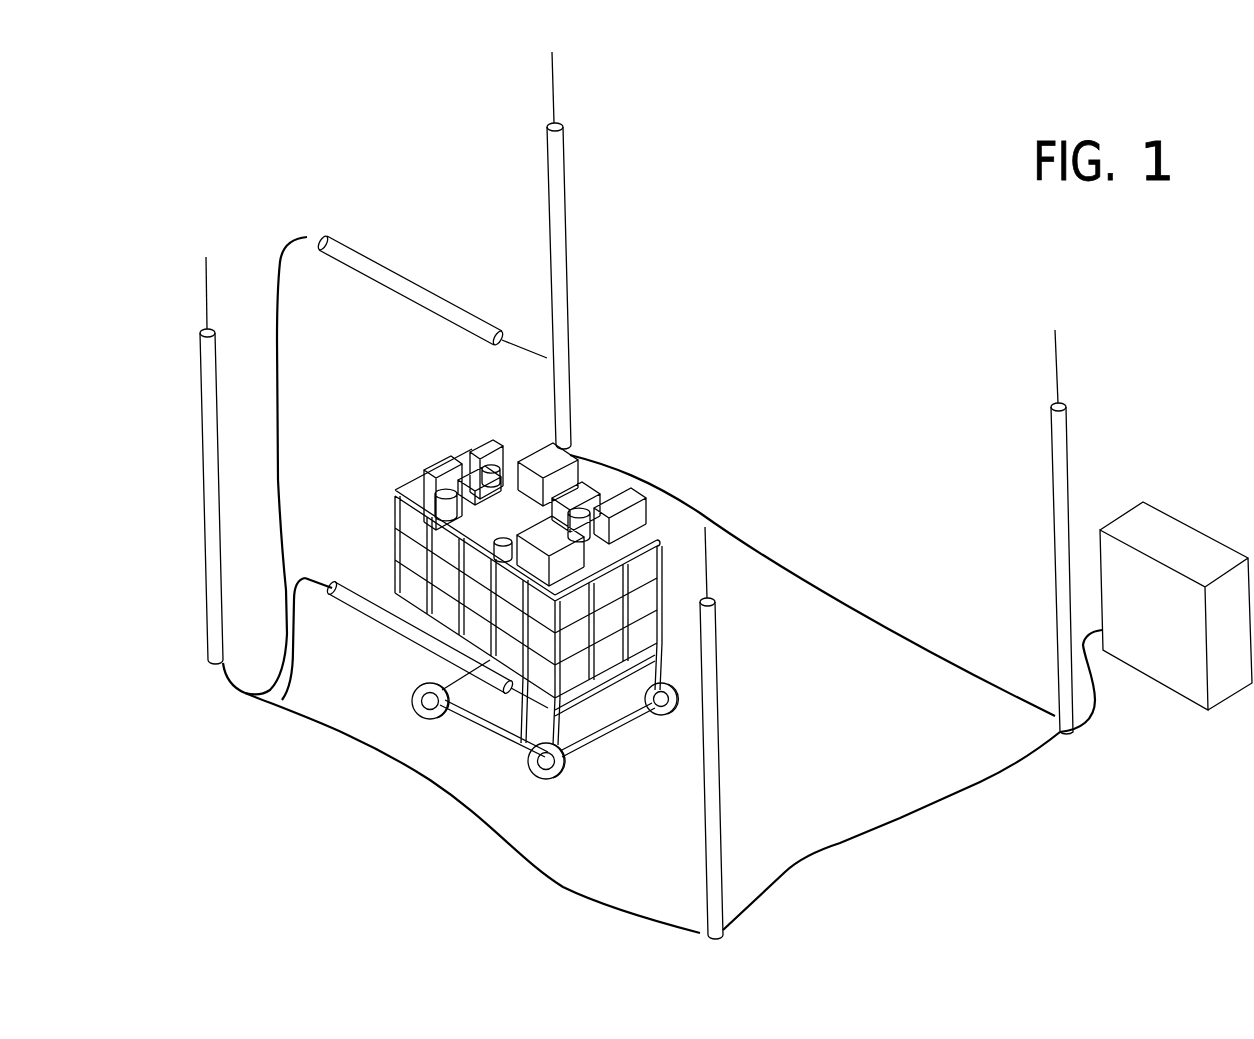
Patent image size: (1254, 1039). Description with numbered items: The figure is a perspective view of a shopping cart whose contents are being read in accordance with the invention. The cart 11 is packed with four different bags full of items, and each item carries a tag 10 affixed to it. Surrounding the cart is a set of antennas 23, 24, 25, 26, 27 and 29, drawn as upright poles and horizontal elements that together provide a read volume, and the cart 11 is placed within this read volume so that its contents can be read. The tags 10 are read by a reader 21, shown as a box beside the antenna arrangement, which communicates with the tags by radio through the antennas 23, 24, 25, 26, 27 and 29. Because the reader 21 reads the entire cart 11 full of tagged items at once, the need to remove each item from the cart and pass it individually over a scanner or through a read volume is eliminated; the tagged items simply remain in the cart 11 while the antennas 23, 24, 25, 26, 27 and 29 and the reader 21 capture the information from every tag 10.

The tag 10 is at (428, 460).
The cart 11 is at (390, 513).
The reader 21 is at (1165, 513).
The antenna 23 is at (722, 758).
The antenna 24 is at (383, 628).
The antenna 25 is at (1051, 453).
The antenna 26 is at (382, 263).
The antenna 27 is at (566, 250).
The antenna 29 is at (200, 417).